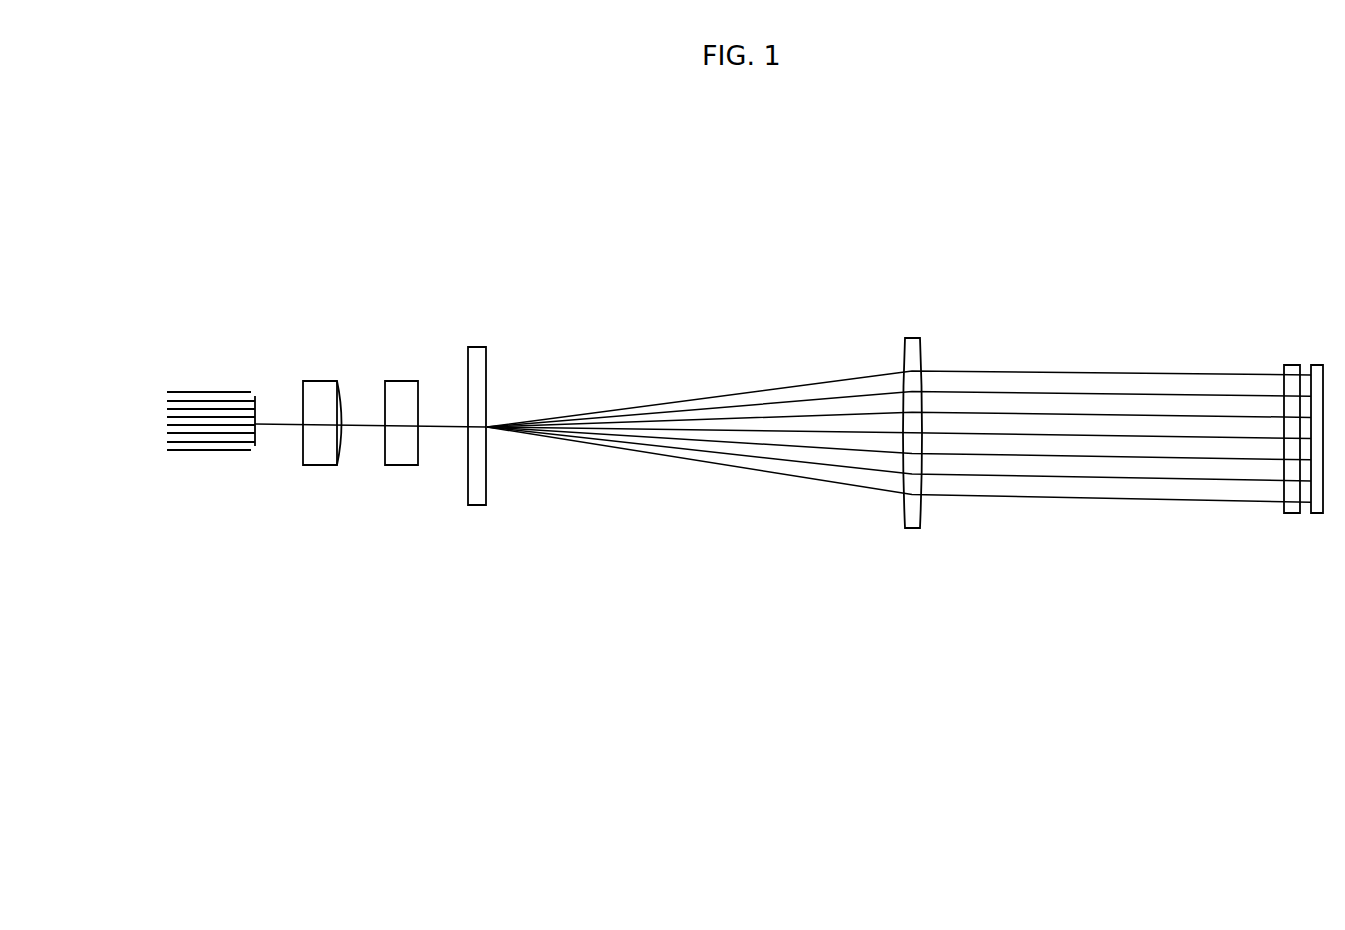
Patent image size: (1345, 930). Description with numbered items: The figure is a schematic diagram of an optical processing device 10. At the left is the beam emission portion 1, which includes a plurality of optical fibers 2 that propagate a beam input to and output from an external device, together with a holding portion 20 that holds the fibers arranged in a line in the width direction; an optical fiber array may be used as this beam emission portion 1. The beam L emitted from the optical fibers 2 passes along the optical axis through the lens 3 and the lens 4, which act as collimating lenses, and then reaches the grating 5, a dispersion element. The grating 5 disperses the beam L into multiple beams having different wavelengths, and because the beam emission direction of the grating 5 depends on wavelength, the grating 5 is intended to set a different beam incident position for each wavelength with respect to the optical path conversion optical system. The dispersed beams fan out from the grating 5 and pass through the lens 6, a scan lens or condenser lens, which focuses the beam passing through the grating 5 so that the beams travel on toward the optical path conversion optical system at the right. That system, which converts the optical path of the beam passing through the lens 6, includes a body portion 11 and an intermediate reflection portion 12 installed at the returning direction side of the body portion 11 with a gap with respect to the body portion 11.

The beam emission portion 1 is at (191, 455).
The optical fibers 2 is at (207, 416).
The holding portion 20 is at (228, 455).
The lens 3 is at (320, 467).
The lens 4 is at (402, 467).
The grating 5 is at (475, 507).
The lens 6 is at (910, 530).
The optical processing device 10 is at (1122, 281).
The body portion 11 is at (1318, 365).
The intermediate reflection portion 12 is at (1292, 365).
The beam L is at (776, 418).